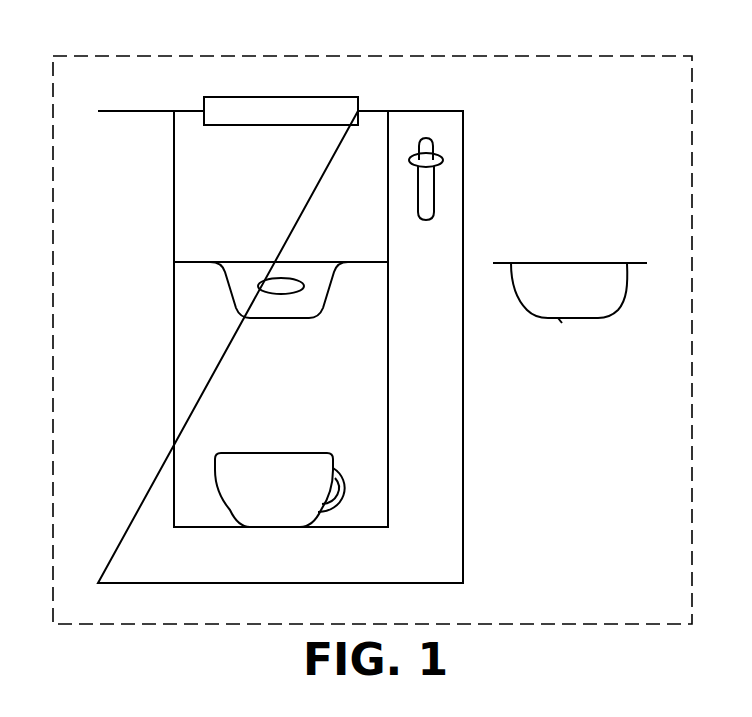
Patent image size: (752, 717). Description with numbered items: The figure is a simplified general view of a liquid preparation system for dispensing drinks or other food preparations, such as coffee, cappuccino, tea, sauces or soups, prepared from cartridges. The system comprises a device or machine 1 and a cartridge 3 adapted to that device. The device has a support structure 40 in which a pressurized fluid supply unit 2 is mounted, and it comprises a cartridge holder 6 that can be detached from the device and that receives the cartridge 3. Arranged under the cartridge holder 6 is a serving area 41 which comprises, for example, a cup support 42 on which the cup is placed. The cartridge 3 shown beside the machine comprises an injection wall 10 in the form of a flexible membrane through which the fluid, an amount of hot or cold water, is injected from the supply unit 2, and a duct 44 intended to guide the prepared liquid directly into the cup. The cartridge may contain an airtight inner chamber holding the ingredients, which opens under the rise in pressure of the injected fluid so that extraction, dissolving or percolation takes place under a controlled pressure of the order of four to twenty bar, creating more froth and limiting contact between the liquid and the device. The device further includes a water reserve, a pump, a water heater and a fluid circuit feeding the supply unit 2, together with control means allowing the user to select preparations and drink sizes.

The device or machine 1 is at (486, 555).
The pressurized fluid supply unit 2 is at (280, 155).
The cartridge 3 is at (568, 262).
The cartridge holder 6 is at (331, 300).
The injection wall 10 is at (650, 285).
The support structure 40 is at (110, 360).
The serving area 41 is at (204, 515).
The cup support 42 is at (427, 193).
The duct 44 is at (580, 319).